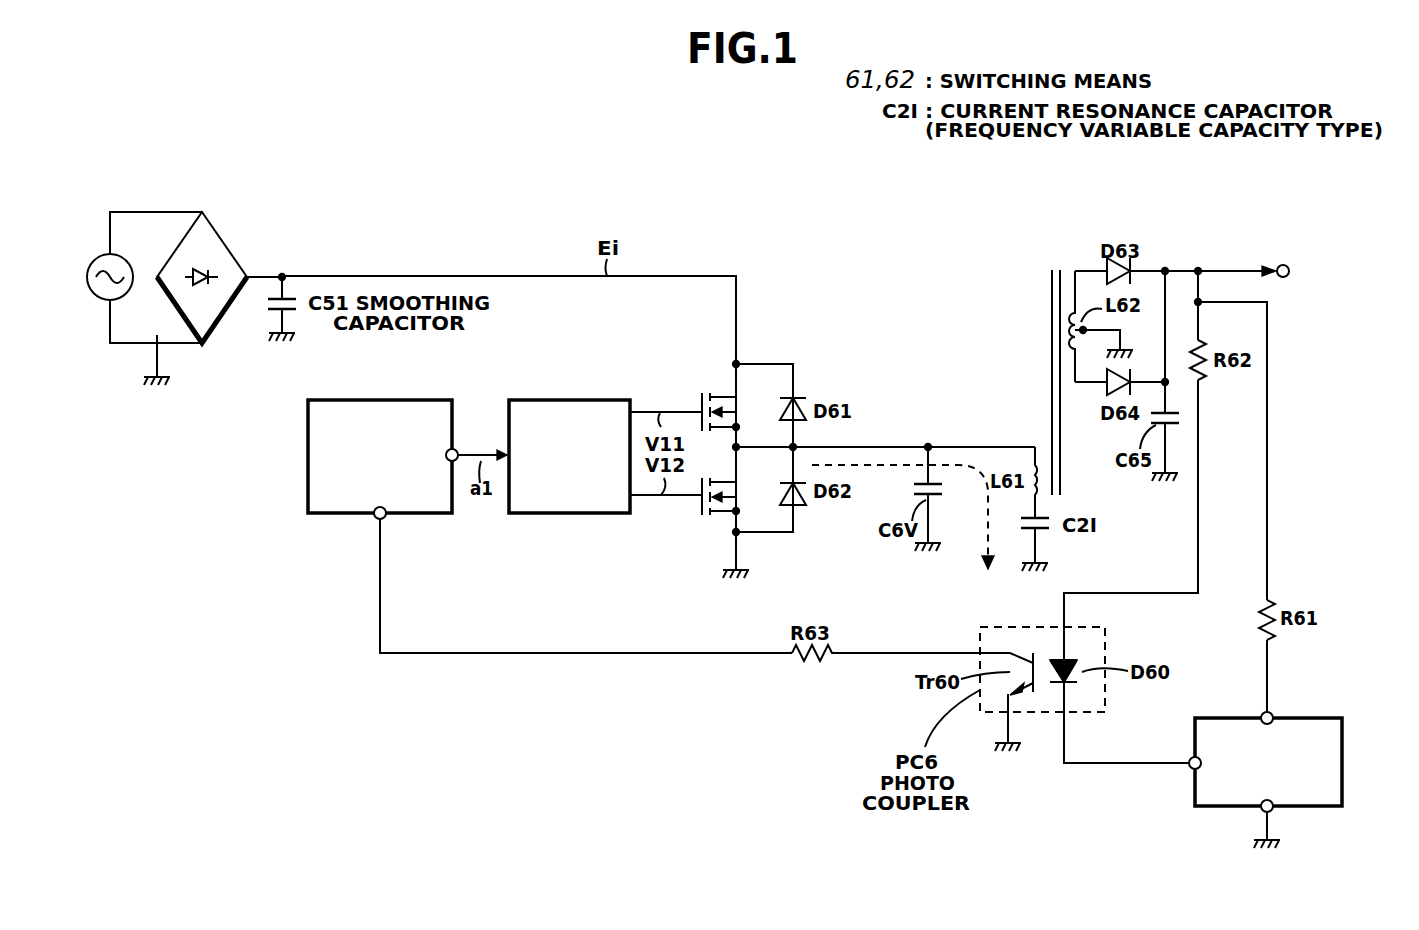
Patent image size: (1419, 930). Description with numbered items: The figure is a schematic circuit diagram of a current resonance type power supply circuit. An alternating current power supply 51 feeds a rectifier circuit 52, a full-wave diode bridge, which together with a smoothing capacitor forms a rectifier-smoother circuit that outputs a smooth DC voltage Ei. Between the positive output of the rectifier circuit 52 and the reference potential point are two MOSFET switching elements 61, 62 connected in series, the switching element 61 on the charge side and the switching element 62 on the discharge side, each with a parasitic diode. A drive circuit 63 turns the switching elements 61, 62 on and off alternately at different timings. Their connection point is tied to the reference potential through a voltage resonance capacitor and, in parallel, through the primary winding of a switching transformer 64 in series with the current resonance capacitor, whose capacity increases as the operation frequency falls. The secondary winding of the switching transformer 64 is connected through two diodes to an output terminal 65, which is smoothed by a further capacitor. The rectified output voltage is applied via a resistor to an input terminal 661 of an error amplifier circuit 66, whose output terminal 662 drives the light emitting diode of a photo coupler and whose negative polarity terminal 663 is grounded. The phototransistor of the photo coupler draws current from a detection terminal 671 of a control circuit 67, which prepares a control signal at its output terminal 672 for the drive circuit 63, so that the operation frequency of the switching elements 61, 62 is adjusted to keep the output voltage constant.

The alternating current power supply 51 is at (102, 253).
The rectifier circuit 52 is at (225, 246).
The switching element 61 is at (701, 395).
The switching element 62 is at (702, 514).
The drive circuit 63 is at (572, 400).
The switching transformer 64 is at (1052, 268).
The output terminal 65 is at (1283, 264).
The error amplifier circuit 66 is at (1314, 718).
The control circuit 67 is at (381, 400).
The detection terminal 671 is at (386, 518).
The output terminal 672 is at (456, 450).
The input terminal 661 is at (1262, 714).
The output terminal 662 is at (1189, 760).
The negative polarity terminal 663 is at (1273, 811).